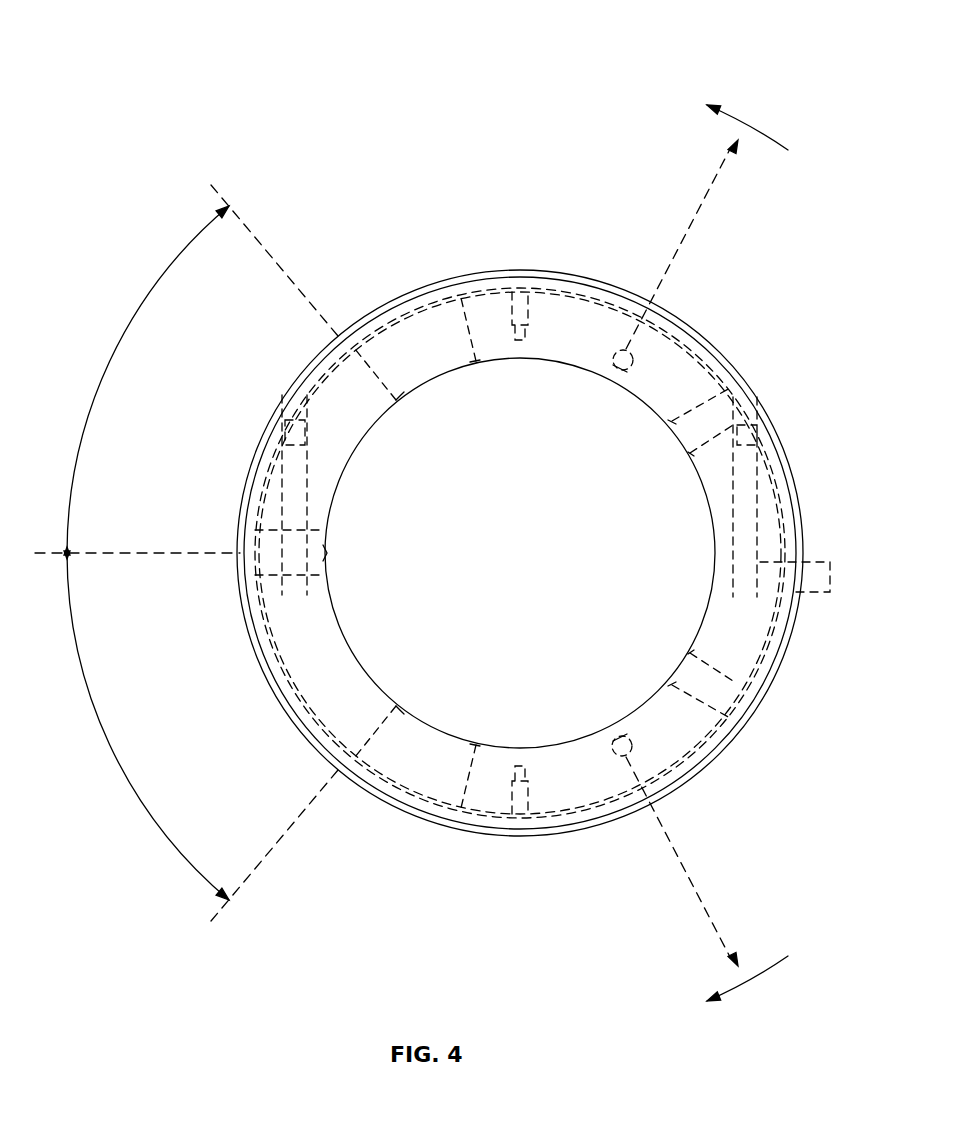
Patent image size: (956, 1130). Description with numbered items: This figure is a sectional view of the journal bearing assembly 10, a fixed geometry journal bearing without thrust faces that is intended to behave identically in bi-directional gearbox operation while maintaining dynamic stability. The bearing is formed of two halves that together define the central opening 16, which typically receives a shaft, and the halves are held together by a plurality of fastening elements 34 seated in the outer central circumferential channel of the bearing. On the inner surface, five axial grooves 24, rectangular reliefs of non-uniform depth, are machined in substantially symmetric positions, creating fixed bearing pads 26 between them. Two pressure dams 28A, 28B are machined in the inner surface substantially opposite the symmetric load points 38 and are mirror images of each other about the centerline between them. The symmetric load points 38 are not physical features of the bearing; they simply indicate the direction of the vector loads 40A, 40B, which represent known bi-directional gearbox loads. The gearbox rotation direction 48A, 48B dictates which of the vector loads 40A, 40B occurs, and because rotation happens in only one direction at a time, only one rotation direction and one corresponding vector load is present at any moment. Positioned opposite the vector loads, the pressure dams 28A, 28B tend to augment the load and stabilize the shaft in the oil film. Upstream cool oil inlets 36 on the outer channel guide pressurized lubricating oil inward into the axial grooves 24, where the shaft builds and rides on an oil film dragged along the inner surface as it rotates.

The journal bearing assembly 10 is at (168, 45).
The central opening 16 is at (695, 610).
The axial grooves 24 is at (455, 375).
The fixed bearing pads 26 is at (565, 362).
The pressure dam 28A is at (126, 332).
The pressure dam 28B is at (148, 812).
The fastening elements 34 is at (300, 412).
The upstream cool oil inlets 36 is at (435, 312).
The symmetric load points 38 is at (633, 360).
The vector load 40A is at (718, 880).
The vector load 40B is at (703, 222).
The gearbox rotation direction 48A is at (757, 985).
The gearbox rotation direction 48B is at (757, 128).